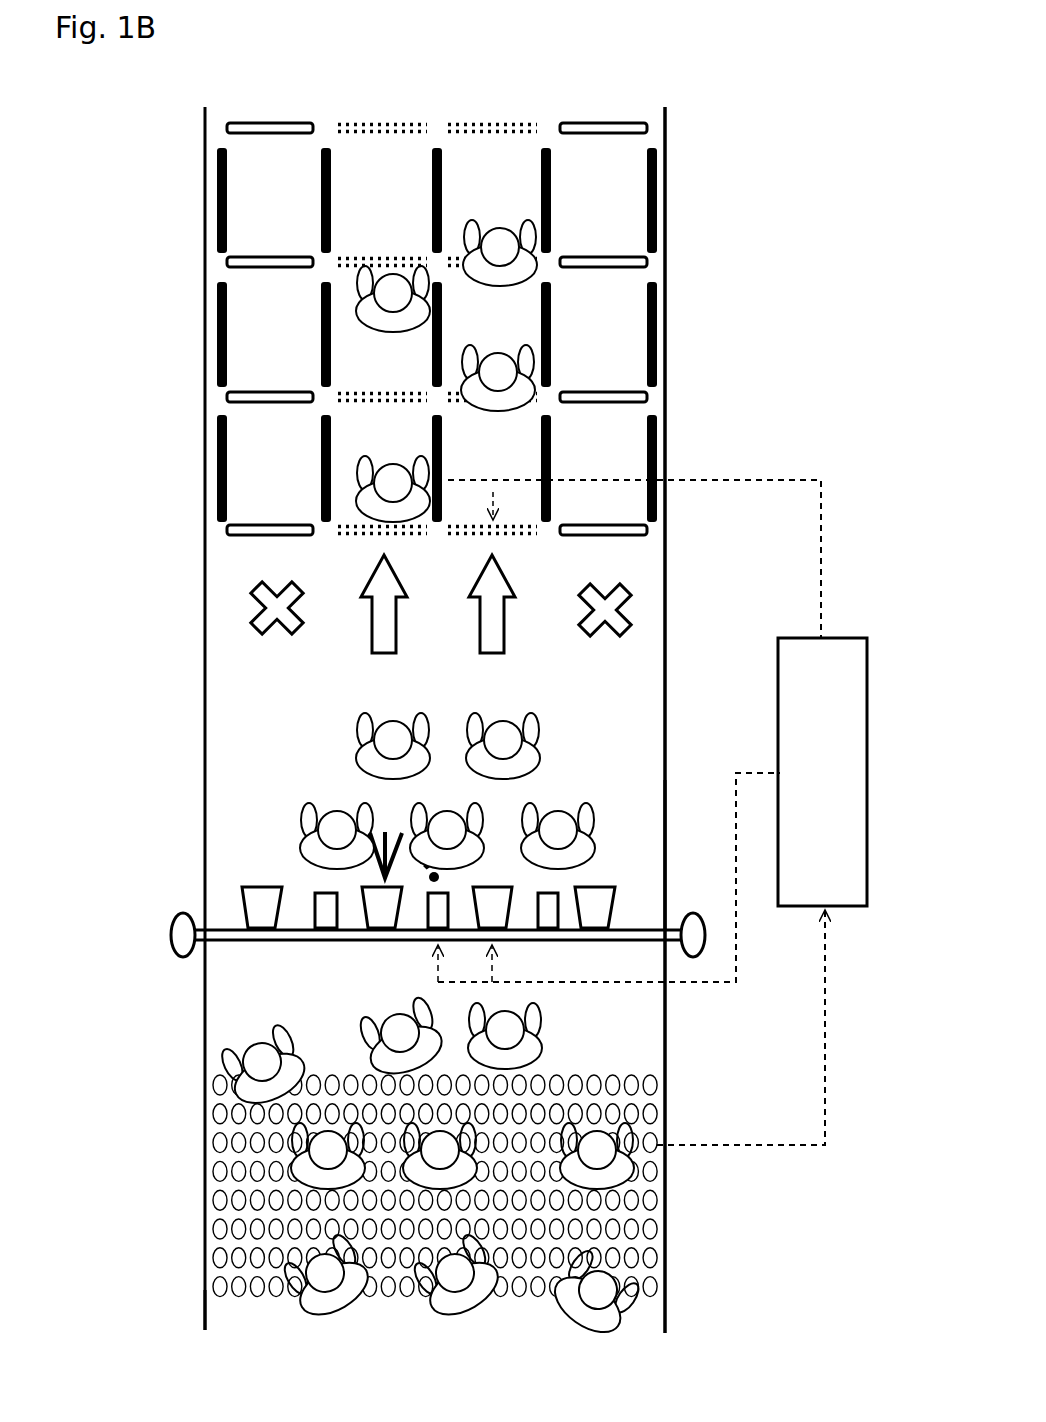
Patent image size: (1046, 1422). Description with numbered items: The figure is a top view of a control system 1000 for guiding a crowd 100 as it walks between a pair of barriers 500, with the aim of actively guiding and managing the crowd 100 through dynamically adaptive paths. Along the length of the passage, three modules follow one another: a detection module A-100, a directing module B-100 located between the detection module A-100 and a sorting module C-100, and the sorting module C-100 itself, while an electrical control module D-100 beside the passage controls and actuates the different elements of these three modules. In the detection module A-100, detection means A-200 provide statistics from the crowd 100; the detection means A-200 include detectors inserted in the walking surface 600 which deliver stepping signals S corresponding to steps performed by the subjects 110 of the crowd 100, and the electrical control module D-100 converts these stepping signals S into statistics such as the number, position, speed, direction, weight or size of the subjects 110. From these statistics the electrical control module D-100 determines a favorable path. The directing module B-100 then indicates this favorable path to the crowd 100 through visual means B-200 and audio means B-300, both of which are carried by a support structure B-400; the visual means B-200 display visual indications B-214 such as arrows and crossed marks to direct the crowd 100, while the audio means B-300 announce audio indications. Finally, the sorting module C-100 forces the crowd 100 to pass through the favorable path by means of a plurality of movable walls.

The control system 1000 is at (705, 108).
The barriers 500 is at (670, 407).
The sorting module C-100 is at (162, 123).
The directing module B-100 is at (162, 555).
The detection module A-100 is at (162, 990).
The visual indications B-214 is at (503, 627).
The walking surface 600 is at (414, 688).
The crowd 100 is at (310, 730).
The subjects 110 is at (533, 760).
The visual means B-200 is at (500, 943).
The audio means B-300 is at (423, 917).
The support structure B-400 is at (640, 880).
The electrical control module D-100 is at (803, 638).
The stepping signals S is at (741, 1027).
The detection means A-200 is at (648, 1322).